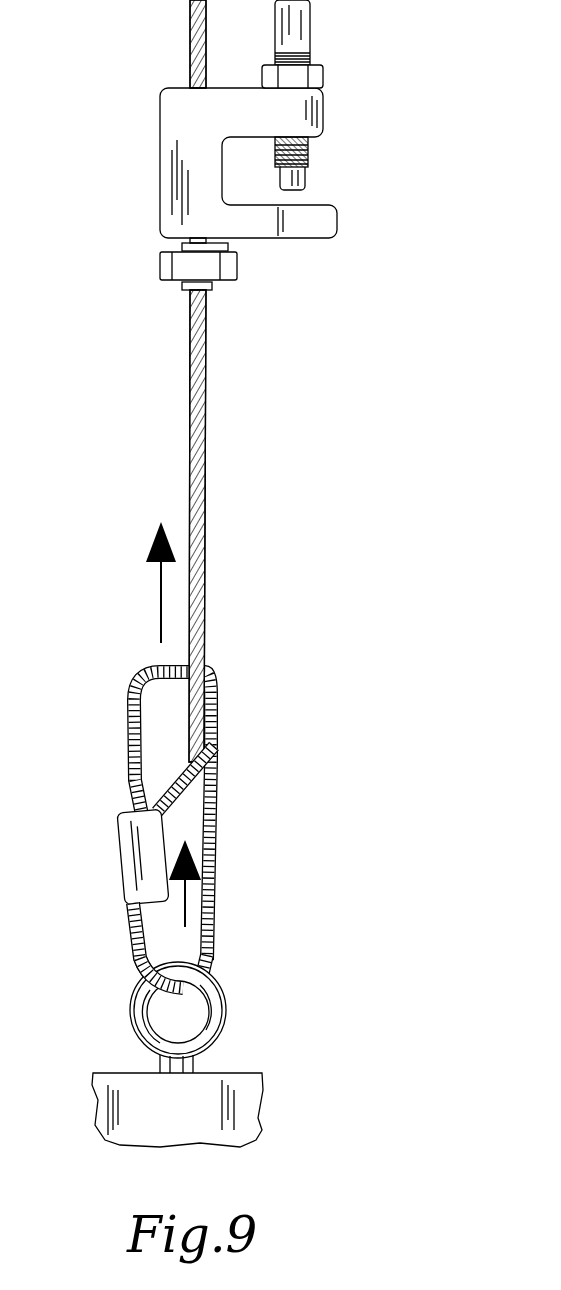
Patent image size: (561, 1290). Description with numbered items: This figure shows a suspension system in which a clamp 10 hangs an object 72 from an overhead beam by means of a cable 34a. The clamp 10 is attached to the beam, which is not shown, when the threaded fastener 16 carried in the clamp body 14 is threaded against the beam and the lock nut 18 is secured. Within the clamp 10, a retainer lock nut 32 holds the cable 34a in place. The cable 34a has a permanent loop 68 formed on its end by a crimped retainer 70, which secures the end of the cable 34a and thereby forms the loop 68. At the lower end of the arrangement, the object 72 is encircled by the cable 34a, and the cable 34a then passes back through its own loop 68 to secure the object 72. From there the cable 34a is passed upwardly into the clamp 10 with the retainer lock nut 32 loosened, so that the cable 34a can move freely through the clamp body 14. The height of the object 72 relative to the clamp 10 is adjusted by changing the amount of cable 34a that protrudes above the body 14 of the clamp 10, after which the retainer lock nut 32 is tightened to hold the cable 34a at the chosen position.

The clamp 10 is at (98, 209).
The clamp body 14 is at (160, 112).
The threaded fastener 16 is at (300, 35).
The lock nut 18 is at (325, 75).
The retainer lock nut 32 is at (165, 270).
The cable 34a is at (200, 343).
The permanent loop 68 is at (133, 710).
The crimped retainer 70 is at (128, 855).
The object 72 is at (250, 1100).